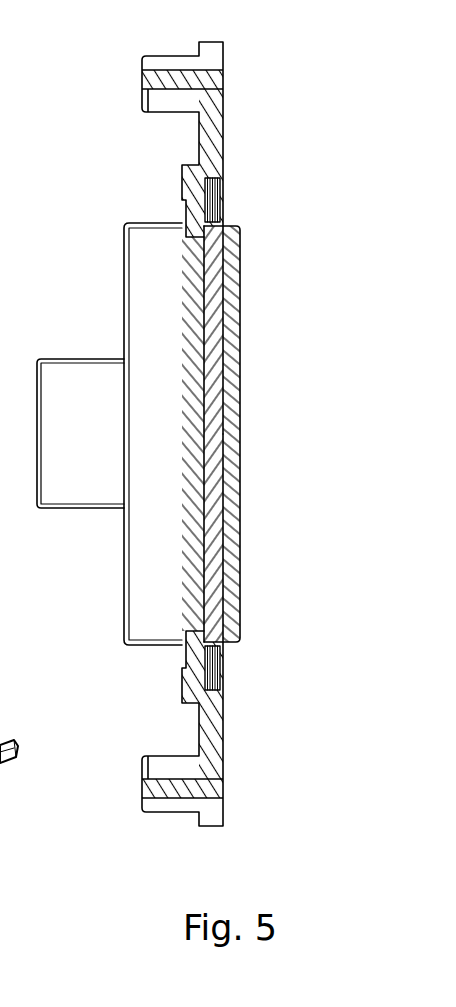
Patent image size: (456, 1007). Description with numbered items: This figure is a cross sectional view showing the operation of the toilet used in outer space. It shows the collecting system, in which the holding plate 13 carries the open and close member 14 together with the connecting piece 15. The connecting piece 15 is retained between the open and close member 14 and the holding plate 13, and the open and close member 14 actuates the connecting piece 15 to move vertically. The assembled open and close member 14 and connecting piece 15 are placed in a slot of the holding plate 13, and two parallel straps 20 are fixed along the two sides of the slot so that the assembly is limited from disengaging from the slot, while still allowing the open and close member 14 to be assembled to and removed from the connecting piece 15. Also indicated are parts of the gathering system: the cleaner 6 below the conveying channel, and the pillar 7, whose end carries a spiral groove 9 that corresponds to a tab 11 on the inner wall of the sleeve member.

The cleaner 6 is at (62, 465).
The pillar 7 is at (0, 607).
The spiral groove 9 is at (0, 667).
The tab 11 is at (0, 732).
The holding plate 13 is at (222, 770).
The open and close member 14 is at (236, 525).
The connecting piece 15 is at (207, 450).
The straps 20 is at (223, 200).